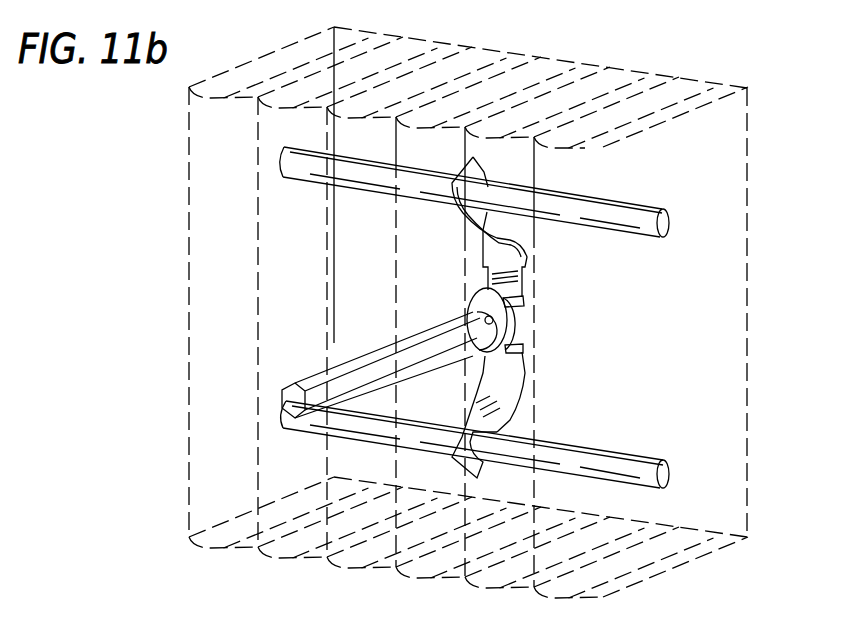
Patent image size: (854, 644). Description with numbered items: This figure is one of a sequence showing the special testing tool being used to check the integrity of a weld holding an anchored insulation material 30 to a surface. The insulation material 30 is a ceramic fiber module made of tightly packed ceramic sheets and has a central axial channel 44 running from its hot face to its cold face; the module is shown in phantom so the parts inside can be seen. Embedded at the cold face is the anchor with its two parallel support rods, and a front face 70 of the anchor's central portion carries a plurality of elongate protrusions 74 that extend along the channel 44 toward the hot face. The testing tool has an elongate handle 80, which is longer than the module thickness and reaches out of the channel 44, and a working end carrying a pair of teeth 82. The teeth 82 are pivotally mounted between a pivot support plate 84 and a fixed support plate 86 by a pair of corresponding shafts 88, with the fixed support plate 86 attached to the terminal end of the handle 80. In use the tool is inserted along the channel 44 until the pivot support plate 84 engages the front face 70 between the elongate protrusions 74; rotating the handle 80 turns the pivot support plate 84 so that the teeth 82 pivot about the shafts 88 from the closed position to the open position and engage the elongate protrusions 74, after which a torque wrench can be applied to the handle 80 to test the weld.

The insulation material 30 is at (720, 131).
The central axial channel 44 is at (367, 351).
The front face 70 is at (527, 377).
The elongate protrusions 74 is at (527, 346).
The elongate handle 80 is at (277, 403).
The pair of teeth 82 is at (474, 298).
The pivot support plate 84 is at (527, 300).
The fixed support plate 86 is at (467, 308).
The shafts 88 is at (522, 322).